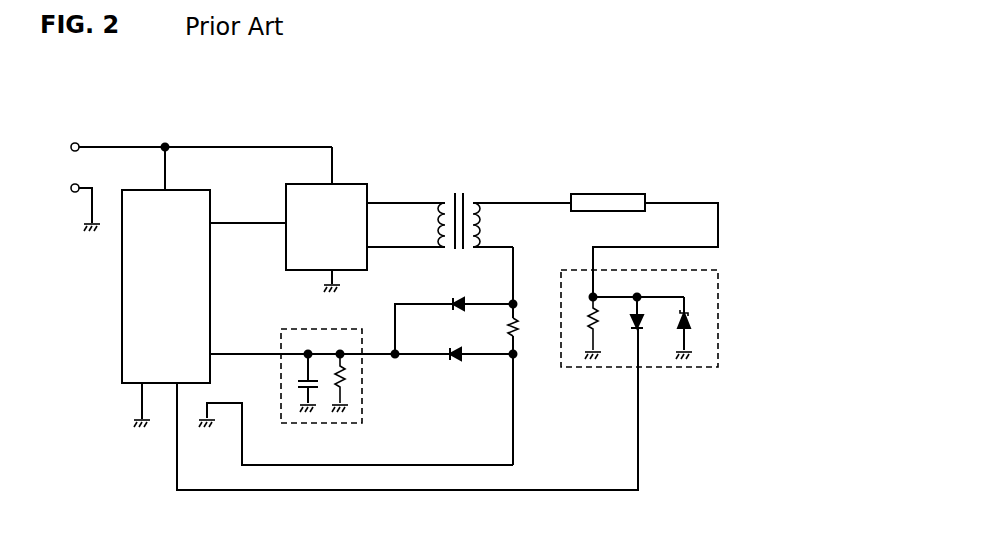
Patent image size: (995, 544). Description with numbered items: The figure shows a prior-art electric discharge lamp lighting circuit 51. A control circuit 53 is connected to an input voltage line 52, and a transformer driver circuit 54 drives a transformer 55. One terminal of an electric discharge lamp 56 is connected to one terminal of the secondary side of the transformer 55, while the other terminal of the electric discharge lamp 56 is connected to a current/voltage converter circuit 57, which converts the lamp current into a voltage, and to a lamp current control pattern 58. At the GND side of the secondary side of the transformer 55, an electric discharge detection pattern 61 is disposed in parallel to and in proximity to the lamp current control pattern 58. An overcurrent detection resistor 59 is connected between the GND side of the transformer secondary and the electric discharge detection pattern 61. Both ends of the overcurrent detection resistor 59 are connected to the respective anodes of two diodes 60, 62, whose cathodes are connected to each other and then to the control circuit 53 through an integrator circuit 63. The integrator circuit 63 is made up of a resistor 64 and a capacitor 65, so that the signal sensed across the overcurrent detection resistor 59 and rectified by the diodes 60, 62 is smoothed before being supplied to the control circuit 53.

The electric discharge lamp lighting circuit 51 is at (611, 108).
The input voltage line 52 is at (99, 146).
The control circuit 53 is at (192, 190).
The transformer driver circuit 54 is at (350, 184).
The transformer 55 is at (456, 193).
The electric discharge lamp 56 is at (595, 193).
The current/voltage converter circuit 57 is at (665, 368).
The lamp current control pattern 58 is at (528, 487).
The overcurrent detection resistor 59 is at (517, 331).
The diode 60 is at (458, 298).
The electric discharge detection pattern 61 is at (373, 465).
The diode 62 is at (453, 363).
The integrator circuit 63 is at (323, 358).
The resistor 64 is at (345, 378).
The capacitor 65 is at (296, 386).